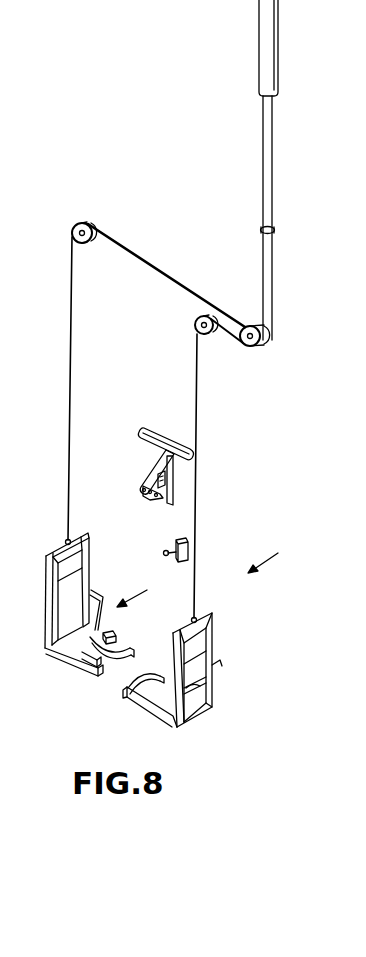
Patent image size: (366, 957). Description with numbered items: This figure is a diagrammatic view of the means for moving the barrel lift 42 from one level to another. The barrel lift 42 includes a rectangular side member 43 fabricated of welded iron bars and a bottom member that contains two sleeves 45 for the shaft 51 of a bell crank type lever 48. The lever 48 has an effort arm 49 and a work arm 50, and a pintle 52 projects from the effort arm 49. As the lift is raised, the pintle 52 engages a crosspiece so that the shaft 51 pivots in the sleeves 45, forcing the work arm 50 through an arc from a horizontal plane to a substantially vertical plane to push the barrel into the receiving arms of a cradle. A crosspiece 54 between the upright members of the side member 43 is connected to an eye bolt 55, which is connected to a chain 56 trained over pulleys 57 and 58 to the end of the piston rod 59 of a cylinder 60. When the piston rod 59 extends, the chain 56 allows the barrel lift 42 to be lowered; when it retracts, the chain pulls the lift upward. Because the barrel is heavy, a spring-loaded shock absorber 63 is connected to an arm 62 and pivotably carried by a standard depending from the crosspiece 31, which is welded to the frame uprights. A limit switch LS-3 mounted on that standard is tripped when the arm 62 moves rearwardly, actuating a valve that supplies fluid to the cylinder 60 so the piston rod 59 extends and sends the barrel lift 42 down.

The crosspiece 31 is at (165, 428).
The barrel lift 42 is at (276, 556).
The rectangular side member 43 is at (201, 650).
The sleeves 45 is at (103, 634).
The bell crank type lever 48 is at (146, 593).
The effort arm 49 is at (93, 592).
The work arm 50 is at (142, 688).
The shaft 51 is at (120, 644).
The pintle 52 is at (218, 660).
The crosspiece 54 is at (48, 553).
The eye bolt 55 is at (66, 540).
The chain 56 is at (197, 512).
The pulley 57 is at (198, 320).
The pulley 58 is at (92, 228).
The piston rod 59 is at (266, 133).
The cylinder 60 is at (270, 25).
The arm 62 is at (145, 478).
The shock absorber 63 is at (163, 500).
The limit switch LS-3 is at (163, 483).